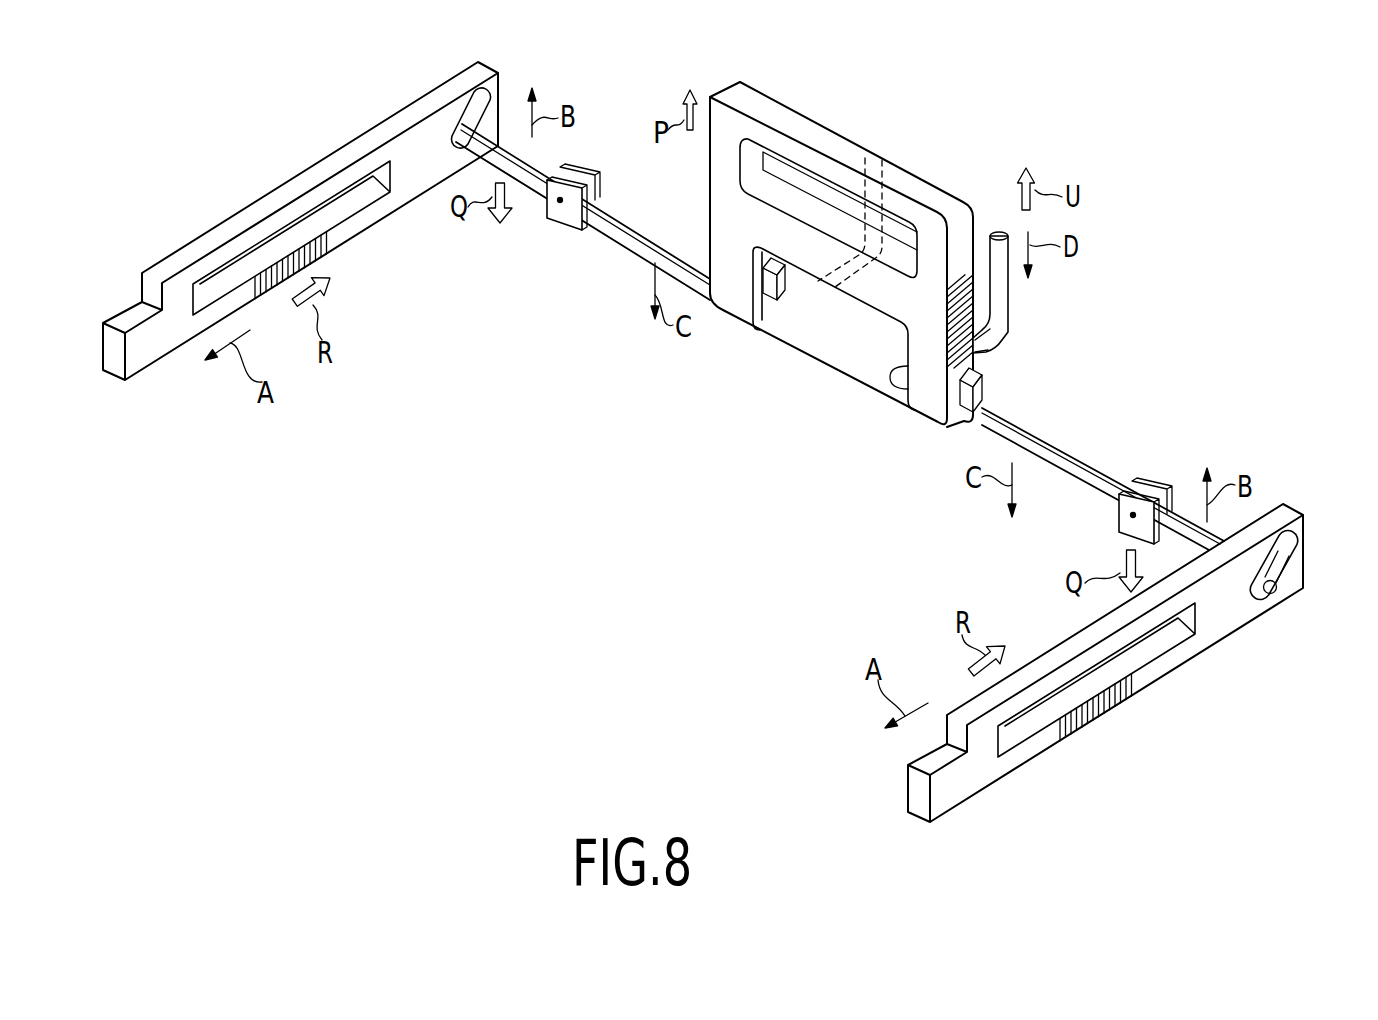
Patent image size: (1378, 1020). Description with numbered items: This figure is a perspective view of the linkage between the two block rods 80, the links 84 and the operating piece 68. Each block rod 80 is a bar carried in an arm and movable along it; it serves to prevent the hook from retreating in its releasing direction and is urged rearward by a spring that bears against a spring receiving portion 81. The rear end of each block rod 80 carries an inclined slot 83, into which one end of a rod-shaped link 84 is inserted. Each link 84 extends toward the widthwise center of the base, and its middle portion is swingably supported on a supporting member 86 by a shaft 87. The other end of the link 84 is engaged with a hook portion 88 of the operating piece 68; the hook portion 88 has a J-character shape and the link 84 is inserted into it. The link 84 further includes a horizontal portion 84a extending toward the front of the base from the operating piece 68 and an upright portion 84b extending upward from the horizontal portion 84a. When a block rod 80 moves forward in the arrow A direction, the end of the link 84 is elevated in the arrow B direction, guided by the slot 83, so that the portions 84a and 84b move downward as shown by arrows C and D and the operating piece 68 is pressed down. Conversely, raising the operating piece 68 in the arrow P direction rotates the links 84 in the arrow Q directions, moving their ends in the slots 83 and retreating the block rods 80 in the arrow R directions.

The operating piece 68 is at (755, 97).
The block rod 80 is at (350, 223).
The spring receiving portion 81 is at (242, 258).
The inclined slot 83 is at (483, 97).
The link 84 is at (622, 228).
The horizontal portion 84a is at (815, 297).
The upright portion 84b is at (898, 165).
The supporting member 86 is at (562, 230).
The shaft 87 is at (560, 200).
The hook portion 88 is at (768, 283).